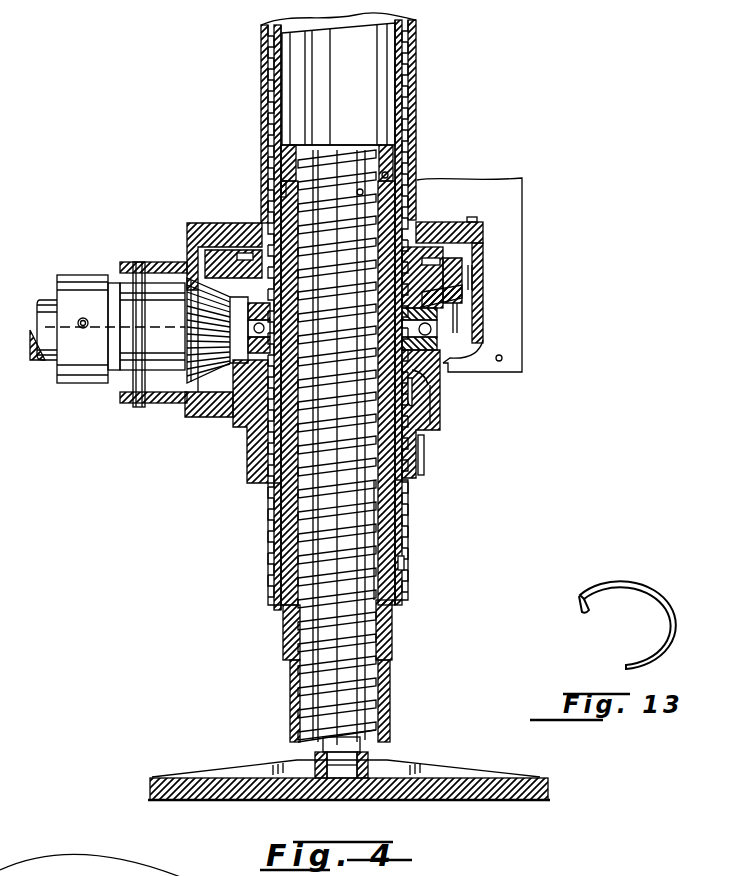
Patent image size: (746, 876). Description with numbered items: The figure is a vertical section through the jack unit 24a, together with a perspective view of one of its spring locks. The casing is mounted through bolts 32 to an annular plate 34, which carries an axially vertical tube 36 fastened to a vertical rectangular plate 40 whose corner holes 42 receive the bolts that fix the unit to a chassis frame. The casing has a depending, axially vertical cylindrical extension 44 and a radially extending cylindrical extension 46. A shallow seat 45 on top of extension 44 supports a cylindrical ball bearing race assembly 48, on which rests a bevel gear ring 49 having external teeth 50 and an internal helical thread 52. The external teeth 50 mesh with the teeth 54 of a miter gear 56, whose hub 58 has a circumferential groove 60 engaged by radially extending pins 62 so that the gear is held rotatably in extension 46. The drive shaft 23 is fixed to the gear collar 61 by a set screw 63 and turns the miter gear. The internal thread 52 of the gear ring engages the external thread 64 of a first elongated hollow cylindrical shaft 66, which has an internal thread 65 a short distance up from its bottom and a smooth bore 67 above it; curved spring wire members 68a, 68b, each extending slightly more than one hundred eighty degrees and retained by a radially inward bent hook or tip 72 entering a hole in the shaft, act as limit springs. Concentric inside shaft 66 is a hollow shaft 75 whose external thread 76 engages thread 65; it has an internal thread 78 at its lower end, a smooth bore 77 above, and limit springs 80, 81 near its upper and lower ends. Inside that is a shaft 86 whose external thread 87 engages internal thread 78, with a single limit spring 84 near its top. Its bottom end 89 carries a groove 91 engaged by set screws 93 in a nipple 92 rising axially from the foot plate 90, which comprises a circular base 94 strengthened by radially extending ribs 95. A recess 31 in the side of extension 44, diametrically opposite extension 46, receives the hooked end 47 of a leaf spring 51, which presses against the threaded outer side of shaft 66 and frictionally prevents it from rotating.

In FIG. 4, the drive shaft 23 is at (52, 312).
In FIG. 4, the jack unit 24a is at (548, 202).
In FIG. 4, the recess 31 is at (440, 397).
In FIG. 4, the bolts 32 is at (478, 190).
In FIG. 4, the annular plate 34 is at (488, 240).
In FIG. 4, the tube 36 is at (417, 143).
In FIG. 4, the vertical rectangular plate 40 is at (505, 212).
In FIG. 4, the corner holes 42 is at (501, 361).
In FIG. 4, the cylindrical extension 44 is at (440, 425).
In FIG. 4, the shallow seat 45 is at (430, 356).
In FIG. 4, the cylindrical extension 46 is at (230, 405).
In FIG. 4, the hooked end 47 is at (418, 382).
In FIG. 4, the ball bearing race assembly 48 is at (440, 322).
In FIG. 4, the bevel gear ring 49 is at (446, 277).
In FIG. 4, the external teeth 50 is at (450, 297).
In FIG. 4, the leaf spring 51 is at (426, 460).
In FIG. 4, the internal helical thread 52 is at (425, 242).
In FIG. 4, the teeth 54 is at (215, 385).
In FIG. 4, the miter gear 56 is at (188, 352).
In FIG. 4, the hub 58 is at (110, 330).
In FIG. 4, the circumferential groove 60 is at (128, 318).
In FIG. 4, the gear collar 61 is at (95, 370).
In FIG. 4, the pins 62 is at (141, 265).
In FIG. 4, the set screw 63 is at (80, 330).
In FIG. 4, the external thread 64 is at (408, 108).
In FIG. 4, the internal thread 65 is at (283, 538).
In FIG. 4, the first hollow cylindrical shaft 66 is at (368, 77).
In FIG. 4, the smooth bore 67 is at (300, 90).
In FIG. 13, the spring 68a is at (650, 588).
In FIG. 4, the spring 68b is at (405, 566).
In FIG. 13, the bent hook 72 is at (578, 606).
In FIG. 4, the hollow shaft 75 is at (305, 148).
In FIG. 4, the external thread 76 is at (283, 168).
In FIG. 4, the smooth bore 77 is at (400, 516).
In FIG. 4, the internal thread 78 is at (398, 590).
In FIG. 4, the limit spring 80 is at (388, 175).
In FIG. 4, the limit spring 81 is at (392, 660).
In FIG. 4, the limit spring 84 is at (328, 195).
In FIG. 4, the shaft 86 is at (372, 720).
In FIG. 4, the external thread 87 is at (315, 692).
In FIG. 4, the bottom end 89 is at (335, 746).
In FIG. 4, the foot plate 90 is at (262, 795).
In FIG. 4, the groove 91 is at (348, 778).
In FIG. 4, the nipple 92 is at (372, 772).
In FIG. 4, the set screws 93 is at (314, 766).
In FIG. 4, the circular base 94 is at (418, 792).
In FIG. 4, the ribs 95 is at (438, 765).